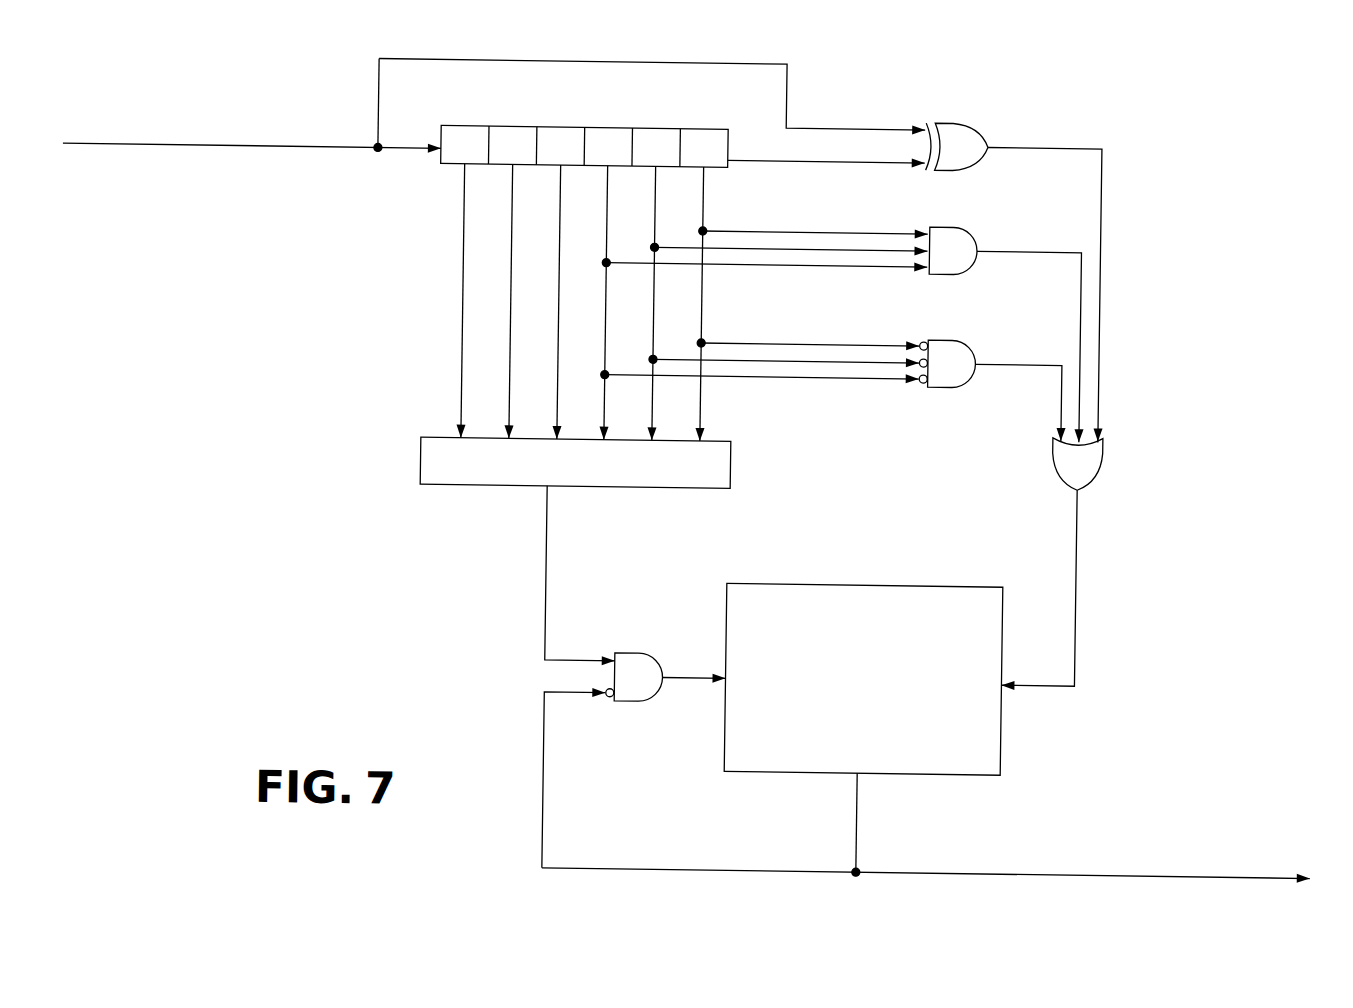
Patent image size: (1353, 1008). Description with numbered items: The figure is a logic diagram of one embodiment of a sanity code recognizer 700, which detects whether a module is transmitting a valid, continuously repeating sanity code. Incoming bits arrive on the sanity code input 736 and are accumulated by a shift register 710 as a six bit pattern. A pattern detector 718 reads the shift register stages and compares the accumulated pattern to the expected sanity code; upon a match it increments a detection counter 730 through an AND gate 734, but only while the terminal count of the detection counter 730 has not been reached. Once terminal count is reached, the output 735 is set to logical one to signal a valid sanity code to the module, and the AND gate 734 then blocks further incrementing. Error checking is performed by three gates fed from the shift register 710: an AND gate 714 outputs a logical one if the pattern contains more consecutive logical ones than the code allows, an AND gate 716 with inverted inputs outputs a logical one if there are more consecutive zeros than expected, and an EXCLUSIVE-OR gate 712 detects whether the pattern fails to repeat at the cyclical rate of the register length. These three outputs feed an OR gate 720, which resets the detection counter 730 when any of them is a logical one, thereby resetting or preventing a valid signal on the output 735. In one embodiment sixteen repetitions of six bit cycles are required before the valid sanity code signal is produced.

The sanity code recognizer 700 is at (1238, 123).
The shift register 710 is at (436, 167).
The EXCLUSIVE-OR (XOR) gate 712 is at (952, 118).
The AND gate 714 is at (948, 224).
The AND gate with inverted inputs 716 is at (948, 337).
The pattern detector 718 is at (732, 464).
The OR gate 720 is at (1104, 437).
The detection counter 730 is at (940, 583).
The AND gate 734 is at (640, 654).
The output 735 is at (922, 870).
The sanity code input 736 is at (252, 156).